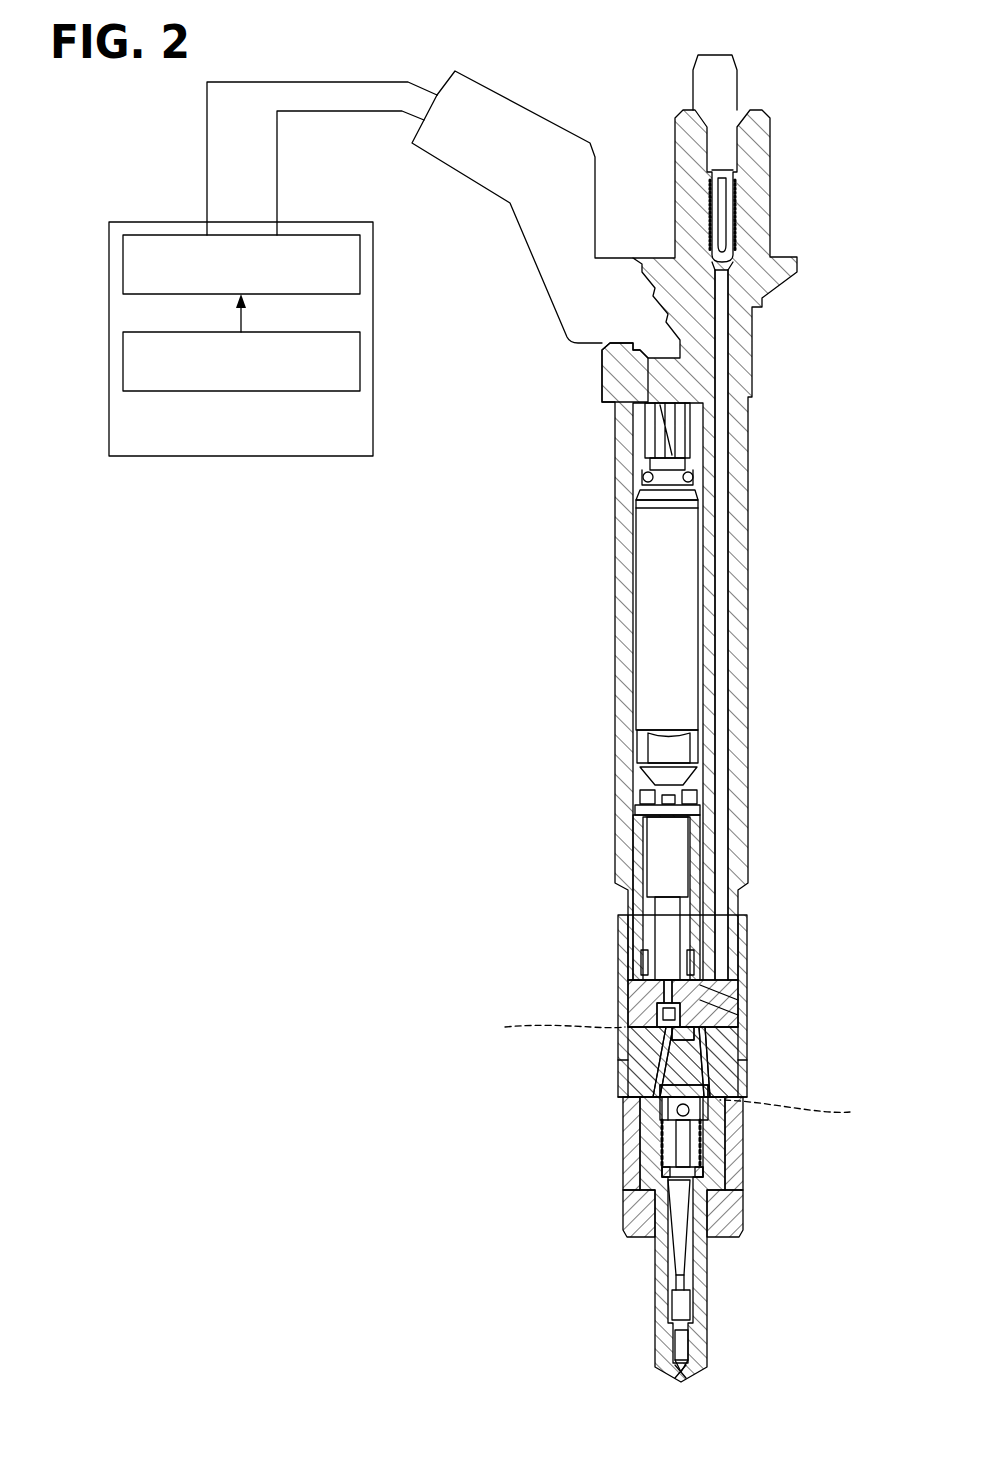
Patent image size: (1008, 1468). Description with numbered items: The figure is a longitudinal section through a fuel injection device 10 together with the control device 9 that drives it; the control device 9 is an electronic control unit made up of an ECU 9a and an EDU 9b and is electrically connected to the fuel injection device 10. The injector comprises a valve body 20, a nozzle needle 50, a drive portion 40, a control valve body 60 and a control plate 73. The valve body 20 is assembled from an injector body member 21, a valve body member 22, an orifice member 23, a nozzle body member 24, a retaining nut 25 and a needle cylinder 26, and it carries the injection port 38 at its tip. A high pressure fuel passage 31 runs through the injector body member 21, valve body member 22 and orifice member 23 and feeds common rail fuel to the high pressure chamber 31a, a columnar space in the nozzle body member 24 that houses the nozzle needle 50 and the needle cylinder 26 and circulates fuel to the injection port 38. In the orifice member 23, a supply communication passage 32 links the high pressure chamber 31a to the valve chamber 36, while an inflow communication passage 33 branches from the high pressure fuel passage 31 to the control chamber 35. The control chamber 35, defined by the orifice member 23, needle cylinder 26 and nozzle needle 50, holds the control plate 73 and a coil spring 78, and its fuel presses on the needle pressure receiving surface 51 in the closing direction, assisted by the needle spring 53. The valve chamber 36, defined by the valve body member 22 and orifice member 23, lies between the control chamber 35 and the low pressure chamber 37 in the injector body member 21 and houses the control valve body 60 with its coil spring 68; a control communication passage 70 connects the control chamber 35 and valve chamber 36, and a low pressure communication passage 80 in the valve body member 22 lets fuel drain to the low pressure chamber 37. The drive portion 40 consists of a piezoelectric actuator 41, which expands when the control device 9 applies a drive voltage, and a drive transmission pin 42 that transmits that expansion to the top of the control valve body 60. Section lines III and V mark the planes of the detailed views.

The control device 9 is at (109, 226).
The ECU 9a is at (123, 361).
The EDU 9b is at (123, 268).
The fuel injection device 10 is at (783, 140).
The valve body 20 is at (767, 399).
The injector body member 21 is at (613, 393).
The valve body member 22 is at (627, 985).
The orifice member 23 is at (630, 1082).
The nozzle body member 24 is at (657, 1270).
The retaining nut 25 is at (630, 1230).
The needle cylinder 26 is at (627, 1135).
The high pressure fuel passage 31 is at (722, 697).
The high pressure chamber 31a is at (705, 1185).
The supply communication passage 32 is at (643, 1052).
The inflow communication passage 33 is at (700, 1047).
The control chamber 35 is at (657, 1117).
The valve chamber 36 is at (655, 1022).
The low pressure chamber 37 is at (645, 950).
The injection port 38 is at (680, 1372).
The drive portion 40 is at (631, 522).
The piezoelectric actuator 41 is at (648, 577).
The drive transmission pin 42 is at (667, 992).
The nozzle needle 50 is at (668, 1193).
The needle pressure receiving surface 51 is at (662, 1120).
The needle spring 53 is at (700, 1168).
The control valve body 60 is at (713, 1025).
The coil spring 68 is at (715, 1005).
The control communication passage 70 is at (700, 1060).
The control plate 73 is at (735, 1095).
The coil spring 78 is at (720, 1120).
The low pressure communication passage 80 is at (700, 993).
The section line III is at (551, 1027).
The section line V is at (797, 1111).